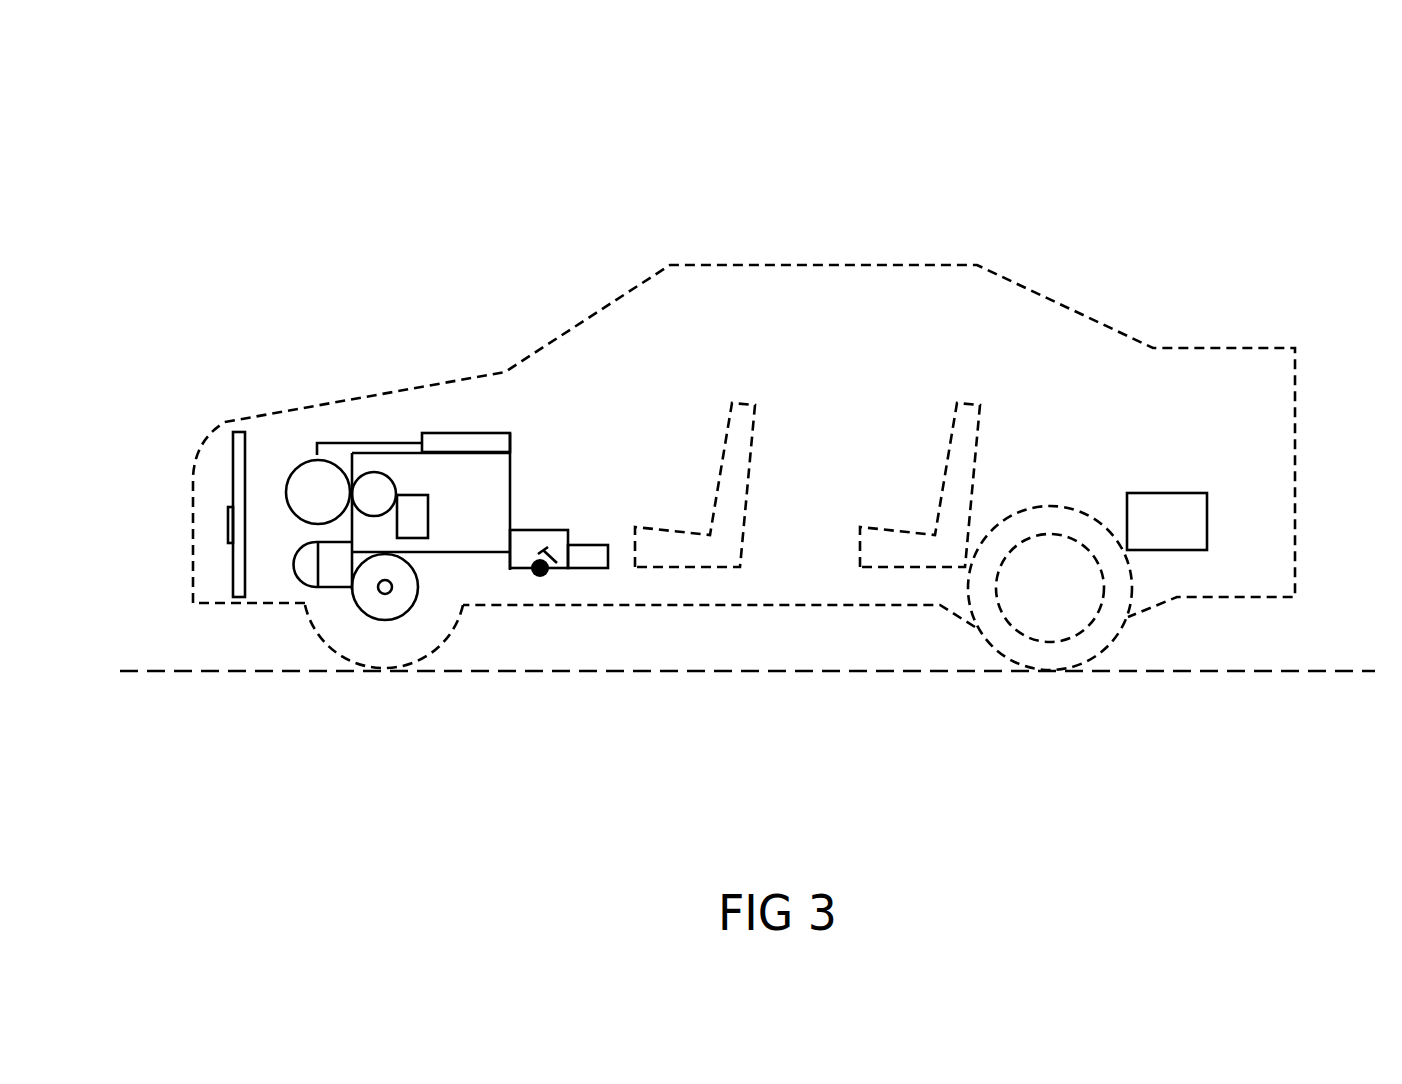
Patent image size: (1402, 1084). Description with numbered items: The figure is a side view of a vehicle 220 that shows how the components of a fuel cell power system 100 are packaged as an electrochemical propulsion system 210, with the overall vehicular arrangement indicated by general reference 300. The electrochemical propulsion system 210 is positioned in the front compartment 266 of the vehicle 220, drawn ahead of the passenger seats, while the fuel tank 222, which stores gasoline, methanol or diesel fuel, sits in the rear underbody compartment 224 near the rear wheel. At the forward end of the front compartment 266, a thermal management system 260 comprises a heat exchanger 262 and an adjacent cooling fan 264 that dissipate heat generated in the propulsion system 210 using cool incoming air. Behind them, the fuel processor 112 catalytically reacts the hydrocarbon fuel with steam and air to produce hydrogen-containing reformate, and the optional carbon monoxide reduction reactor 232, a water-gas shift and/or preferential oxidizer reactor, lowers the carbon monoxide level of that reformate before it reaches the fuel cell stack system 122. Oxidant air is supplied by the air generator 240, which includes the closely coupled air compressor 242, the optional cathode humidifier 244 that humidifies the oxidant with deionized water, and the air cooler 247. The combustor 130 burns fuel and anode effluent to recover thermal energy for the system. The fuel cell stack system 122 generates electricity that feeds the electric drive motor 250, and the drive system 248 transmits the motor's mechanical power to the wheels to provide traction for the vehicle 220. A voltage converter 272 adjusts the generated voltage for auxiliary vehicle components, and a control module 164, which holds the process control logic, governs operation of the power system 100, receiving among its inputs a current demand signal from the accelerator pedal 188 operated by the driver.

The fuel cell power system 100 is at (366, 534).
The fuel processor 112 is at (308, 467).
The fuel cell stack system 122 is at (493, 467).
The combustor 130 is at (300, 570).
The control module 164 is at (603, 570).
The accelerator pedal 188 is at (540, 577).
The electrochemical propulsion system 210 is at (285, 520).
The vehicle 220 is at (797, 262).
The fuel tank 222 is at (1198, 535).
The rear underbody compartment 224 is at (1168, 578).
The carbon monoxide reduction reactor 232 is at (368, 442).
The air generator 240 is at (366, 500).
The air compressor 242 is at (380, 506).
The cathode humidifier 244 is at (414, 500).
The air cooler 247 is at (327, 585).
The drive system 248 is at (392, 635).
The electric drive motor 250 is at (402, 610).
The thermal management system 260 is at (228, 494).
The heat exchanger 262 is at (237, 443).
The cooling fan 264 is at (228, 518).
The front compartment 266 is at (450, 408).
The voltage converter 272 is at (547, 533).
The vehicle 300 is at (1210, 218).